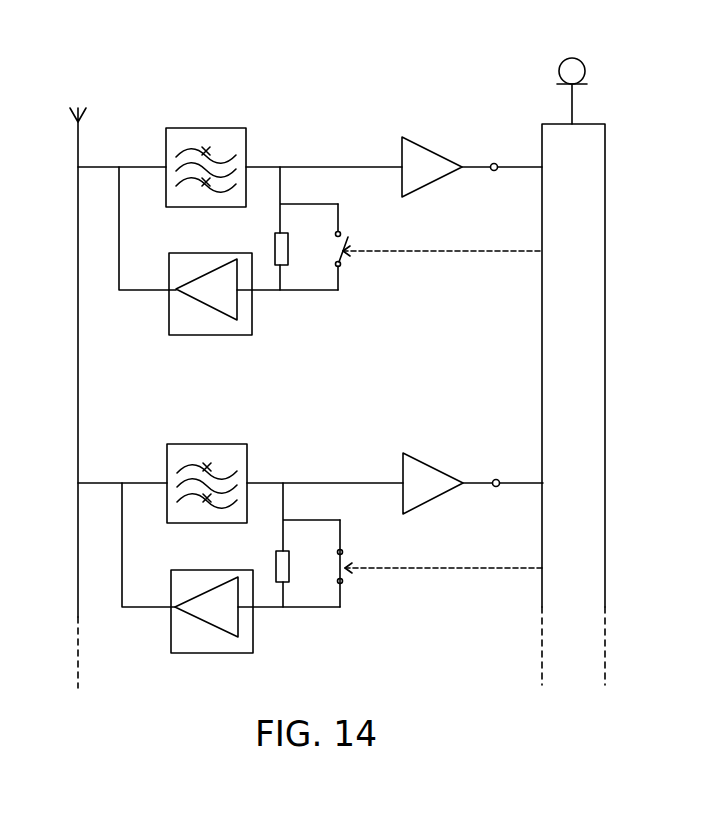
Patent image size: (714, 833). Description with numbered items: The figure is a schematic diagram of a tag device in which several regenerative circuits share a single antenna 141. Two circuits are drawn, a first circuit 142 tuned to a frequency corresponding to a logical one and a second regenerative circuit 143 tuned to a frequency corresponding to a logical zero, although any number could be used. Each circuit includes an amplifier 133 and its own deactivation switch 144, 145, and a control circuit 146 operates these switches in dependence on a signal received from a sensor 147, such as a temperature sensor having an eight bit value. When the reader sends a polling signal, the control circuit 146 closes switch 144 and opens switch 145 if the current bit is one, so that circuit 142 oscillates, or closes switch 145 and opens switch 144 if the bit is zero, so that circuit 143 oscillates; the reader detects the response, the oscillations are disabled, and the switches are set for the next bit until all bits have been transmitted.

The antenna 141 is at (70, 113).
The first circuit 142 is at (238, 128).
The second regenerative circuit 143 is at (232, 445).
The power amplifier 133 is at (219, 335).
The deactivation switch 144 is at (345, 253).
The deactivation switch 145 is at (346, 570).
The control circuit 146 is at (605, 160).
The sensor 147 is at (583, 61).